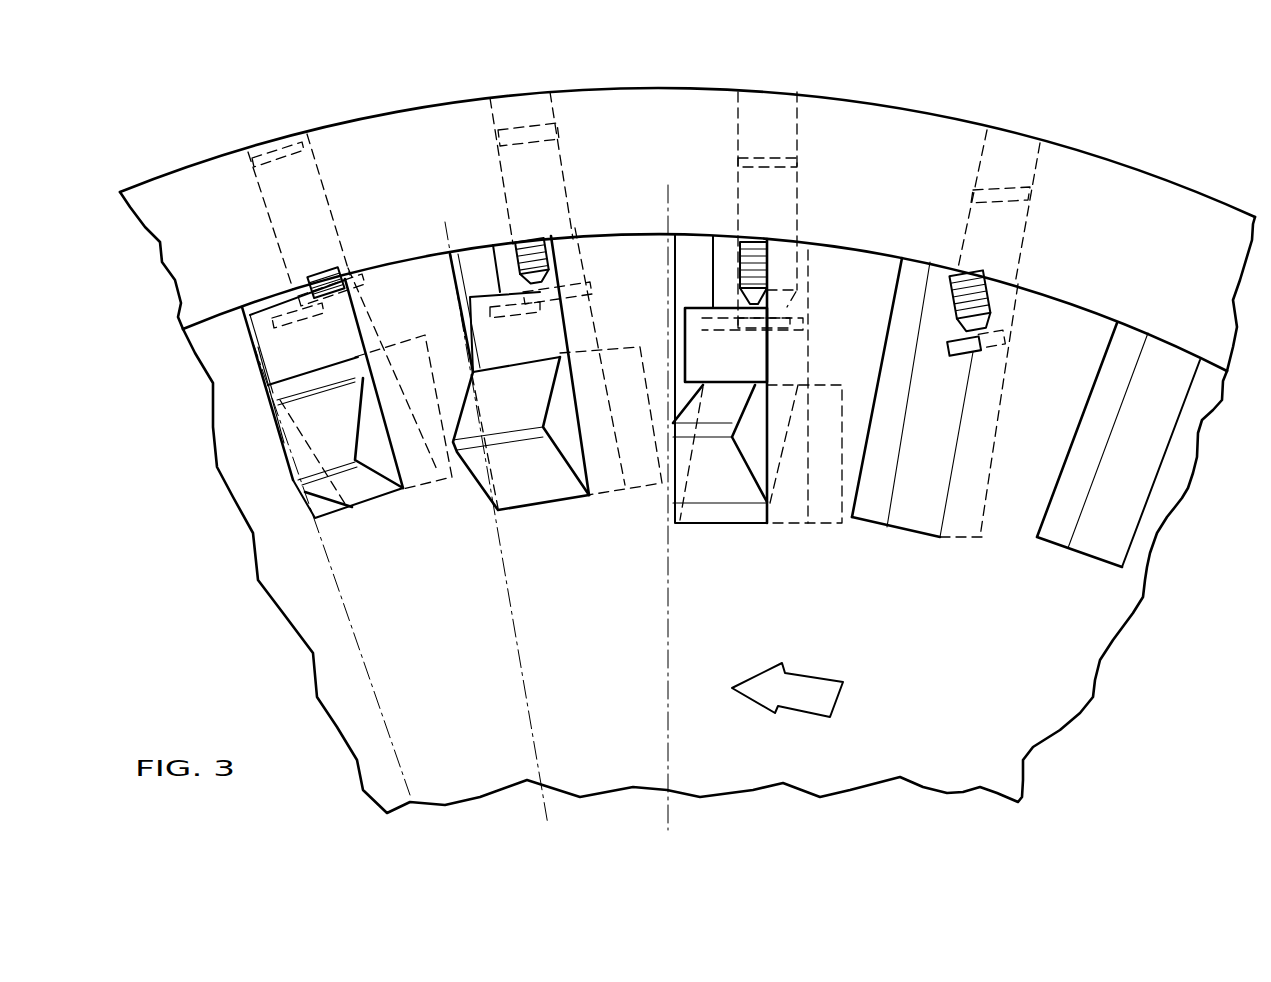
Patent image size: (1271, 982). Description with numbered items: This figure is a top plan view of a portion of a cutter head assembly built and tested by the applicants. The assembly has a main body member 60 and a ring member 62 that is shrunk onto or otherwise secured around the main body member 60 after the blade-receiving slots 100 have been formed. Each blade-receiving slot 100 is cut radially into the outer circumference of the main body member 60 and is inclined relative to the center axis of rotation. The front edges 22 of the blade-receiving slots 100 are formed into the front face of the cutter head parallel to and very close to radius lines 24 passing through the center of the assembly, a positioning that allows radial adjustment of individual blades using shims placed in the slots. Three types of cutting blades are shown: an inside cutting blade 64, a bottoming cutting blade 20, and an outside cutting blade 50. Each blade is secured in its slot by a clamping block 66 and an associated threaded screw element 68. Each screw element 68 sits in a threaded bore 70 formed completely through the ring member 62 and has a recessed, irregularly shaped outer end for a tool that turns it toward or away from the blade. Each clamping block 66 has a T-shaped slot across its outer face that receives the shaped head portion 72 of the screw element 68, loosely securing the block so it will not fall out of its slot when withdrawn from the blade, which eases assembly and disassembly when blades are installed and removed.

The bottoming cutting blade 20 is at (538, 512).
The front edges 22 is at (273, 357).
The radius lines 24 is at (364, 651).
The outside cutting blade 50 is at (357, 486).
The main body member 60 is at (1005, 635).
The ring member 62 is at (1122, 169).
The inside cutting blade 64 is at (723, 496).
The clamping block 66 is at (312, 355).
The threaded screw element 68 is at (255, 185).
The threaded bore 70 is at (538, 97).
The shaped head portion 72 is at (362, 290).
The blade-receiving slots 100 is at (920, 288).